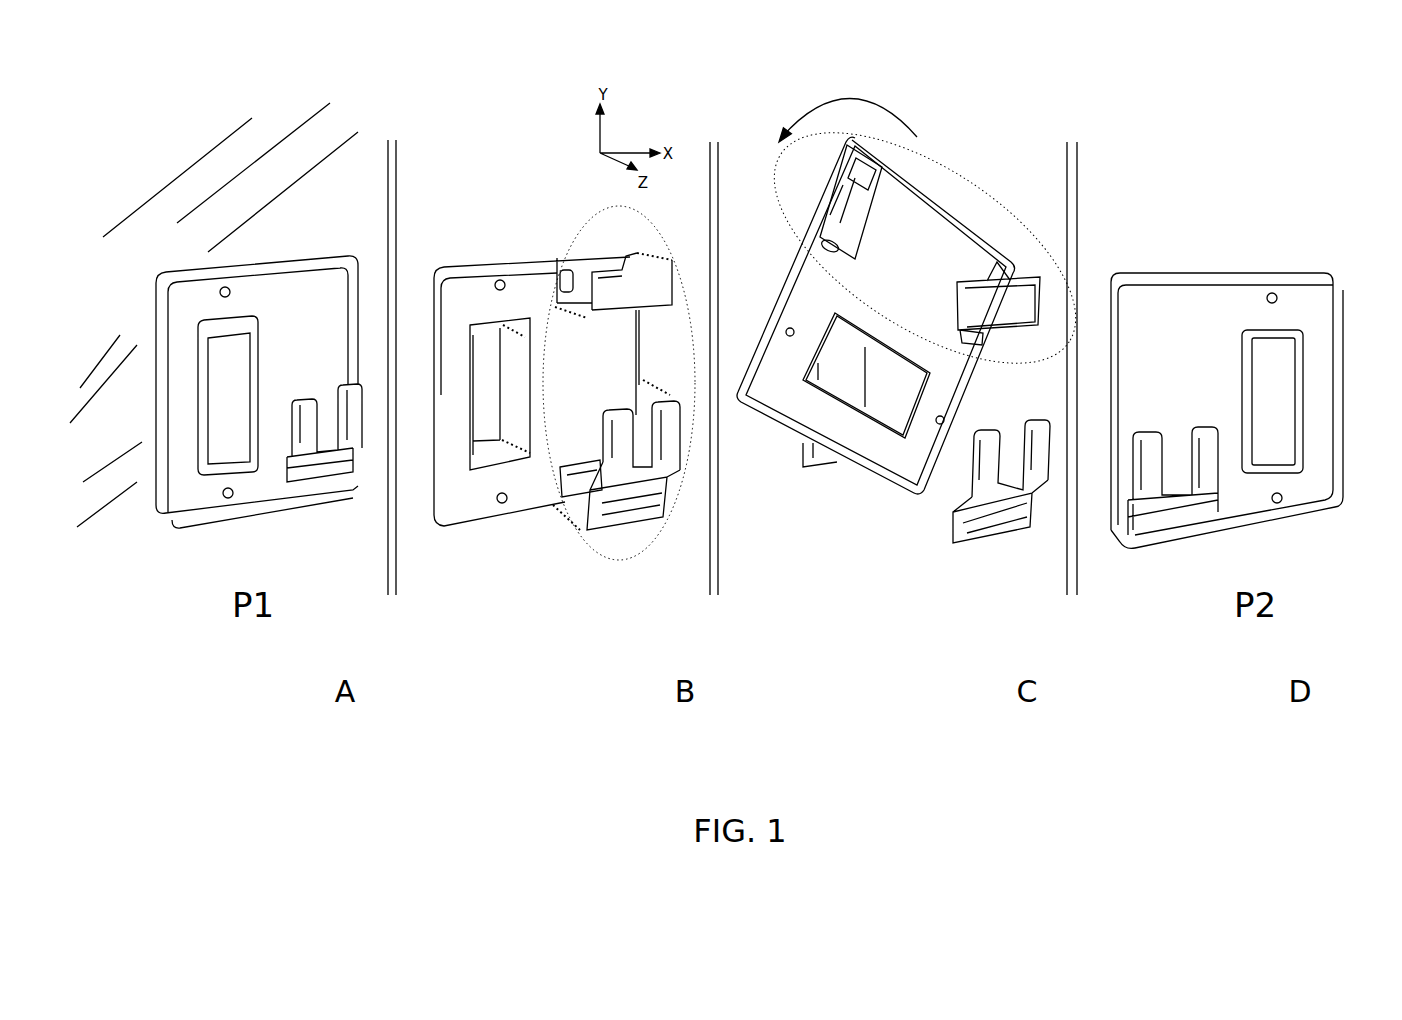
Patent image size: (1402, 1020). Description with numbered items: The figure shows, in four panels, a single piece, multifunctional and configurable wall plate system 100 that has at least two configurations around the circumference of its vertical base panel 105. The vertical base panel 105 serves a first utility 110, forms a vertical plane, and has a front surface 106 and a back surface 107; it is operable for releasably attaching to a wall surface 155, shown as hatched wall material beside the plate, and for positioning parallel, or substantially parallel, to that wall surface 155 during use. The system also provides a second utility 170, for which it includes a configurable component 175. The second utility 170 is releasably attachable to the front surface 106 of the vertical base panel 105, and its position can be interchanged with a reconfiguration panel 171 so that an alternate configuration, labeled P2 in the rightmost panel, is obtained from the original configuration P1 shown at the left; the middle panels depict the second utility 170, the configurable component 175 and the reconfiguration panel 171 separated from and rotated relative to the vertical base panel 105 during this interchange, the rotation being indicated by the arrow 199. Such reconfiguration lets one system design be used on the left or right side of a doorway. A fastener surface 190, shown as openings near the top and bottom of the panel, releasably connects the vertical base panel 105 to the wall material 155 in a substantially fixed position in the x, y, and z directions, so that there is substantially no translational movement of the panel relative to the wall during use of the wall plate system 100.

The wall plate system 100 is at (1330, 206).
The vertical base panel 105 is at (165, 513).
The front surface 106 is at (182, 308).
The back surface 107 is at (300, 258).
The first utility 110 is at (233, 390).
The wall surface 155 is at (214, 313).
The second utility 170 is at (350, 417).
The reconfiguration panel 171 is at (637, 283).
The configurable component 175 is at (582, 535).
The fastener surface 190 is at (233, 490).
The rotation direction 199 is at (913, 137).